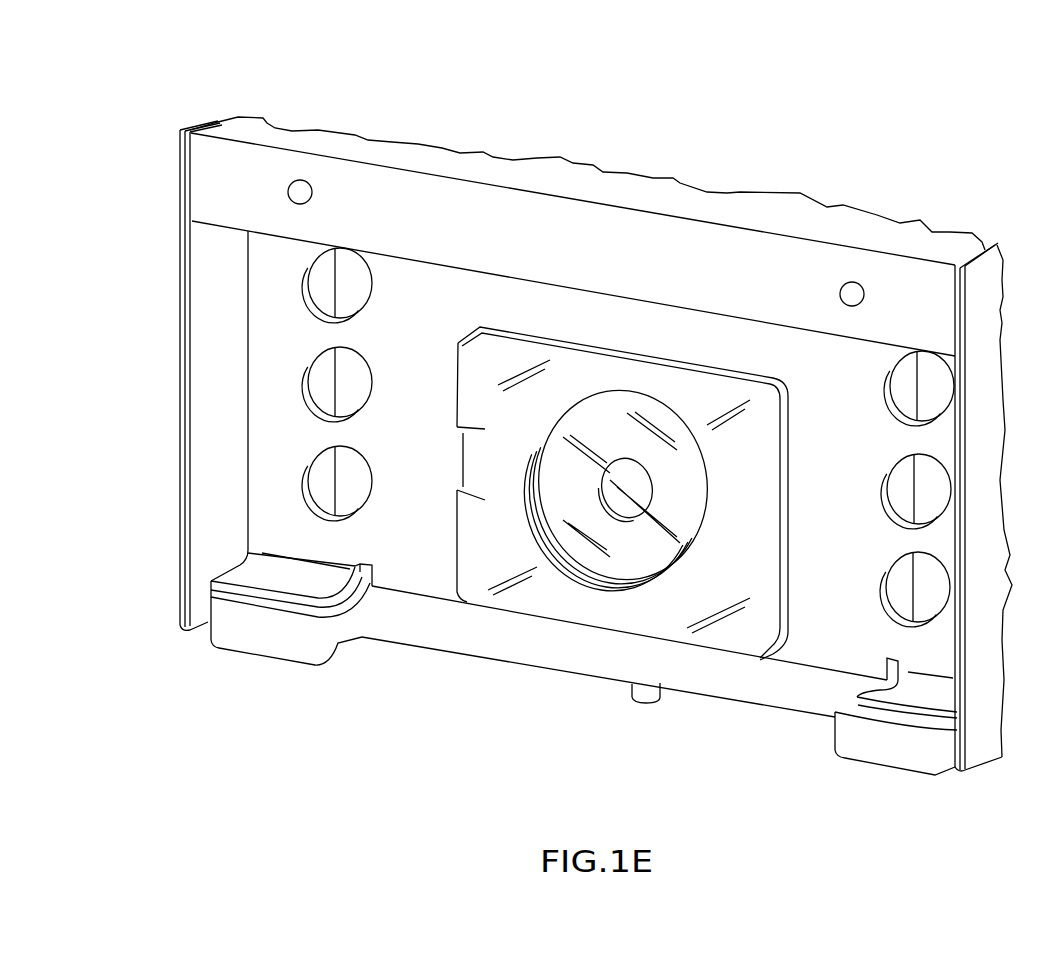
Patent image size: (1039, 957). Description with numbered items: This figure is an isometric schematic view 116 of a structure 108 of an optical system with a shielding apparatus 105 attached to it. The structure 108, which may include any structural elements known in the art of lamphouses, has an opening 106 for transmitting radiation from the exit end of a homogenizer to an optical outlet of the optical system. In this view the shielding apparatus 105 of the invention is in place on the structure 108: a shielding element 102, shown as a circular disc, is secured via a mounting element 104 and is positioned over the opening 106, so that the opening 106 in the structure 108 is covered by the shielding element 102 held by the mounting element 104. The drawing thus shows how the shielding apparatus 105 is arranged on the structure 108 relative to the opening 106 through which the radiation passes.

The schematic view 116 is at (132, 96).
The structure 108 is at (838, 470).
The mounting element 104 is at (758, 393).
The shielding apparatus 105 is at (443, 352).
The shielding element 102 is at (620, 423).
The opening 106 is at (622, 485).